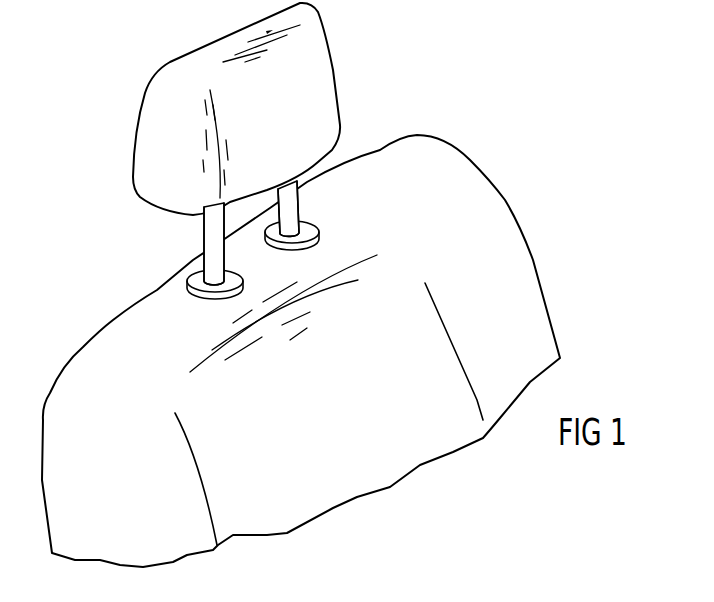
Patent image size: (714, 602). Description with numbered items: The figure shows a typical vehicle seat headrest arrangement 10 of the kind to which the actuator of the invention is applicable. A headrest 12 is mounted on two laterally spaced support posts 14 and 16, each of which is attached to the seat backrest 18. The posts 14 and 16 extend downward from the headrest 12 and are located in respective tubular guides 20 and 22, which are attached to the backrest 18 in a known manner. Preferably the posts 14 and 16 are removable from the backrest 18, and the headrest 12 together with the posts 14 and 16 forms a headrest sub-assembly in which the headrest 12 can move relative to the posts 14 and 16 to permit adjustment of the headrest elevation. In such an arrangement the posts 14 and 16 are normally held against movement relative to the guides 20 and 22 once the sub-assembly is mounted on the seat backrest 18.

The vehicle seat headrest arrangement 10 is at (363, 95).
The headrest 12 is at (178, 103).
The support post 14 is at (203, 234).
The support post 16 is at (297, 180).
The seat backrest 18 is at (117, 392).
The tubular guide 20 is at (197, 283).
The tubular guide 22 is at (319, 232).